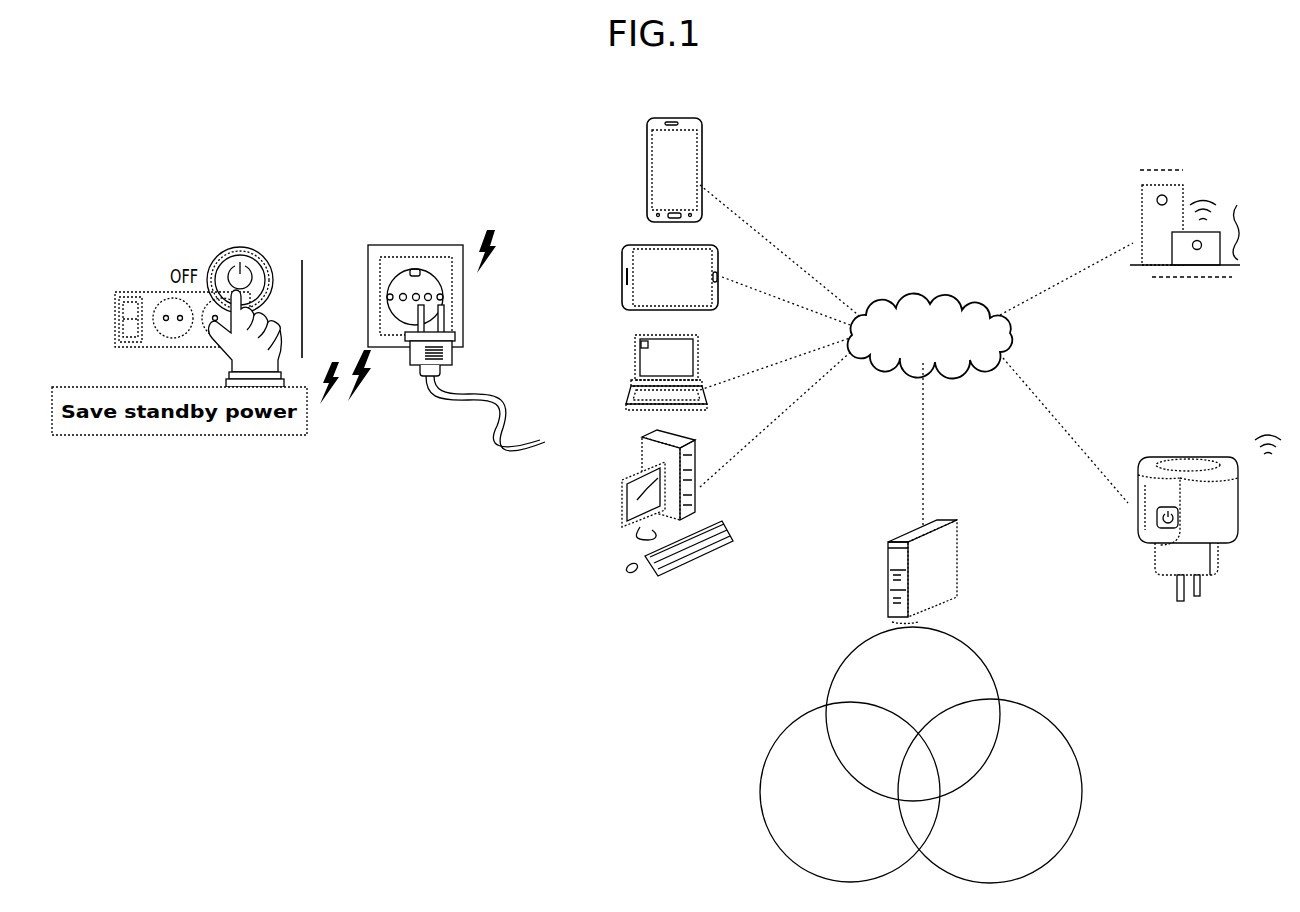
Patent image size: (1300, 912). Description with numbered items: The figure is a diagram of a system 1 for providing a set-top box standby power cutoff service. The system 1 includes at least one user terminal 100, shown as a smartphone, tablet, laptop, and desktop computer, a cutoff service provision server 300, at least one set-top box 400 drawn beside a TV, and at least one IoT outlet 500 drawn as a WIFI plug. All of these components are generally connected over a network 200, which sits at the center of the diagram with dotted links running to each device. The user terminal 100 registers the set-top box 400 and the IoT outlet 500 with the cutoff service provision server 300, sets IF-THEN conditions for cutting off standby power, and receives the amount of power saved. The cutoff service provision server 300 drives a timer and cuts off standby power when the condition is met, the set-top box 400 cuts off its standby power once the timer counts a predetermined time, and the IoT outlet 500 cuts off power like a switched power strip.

The system for providing a set-top box standby power cutoff service 1 is at (1090, 95).
The user terminal 100 is at (602, 517).
The network 200 is at (978, 318).
The cutoff service provision server 300 is at (938, 522).
The set-top box 400 is at (1213, 172).
The IoT outlet 500 is at (1205, 455).